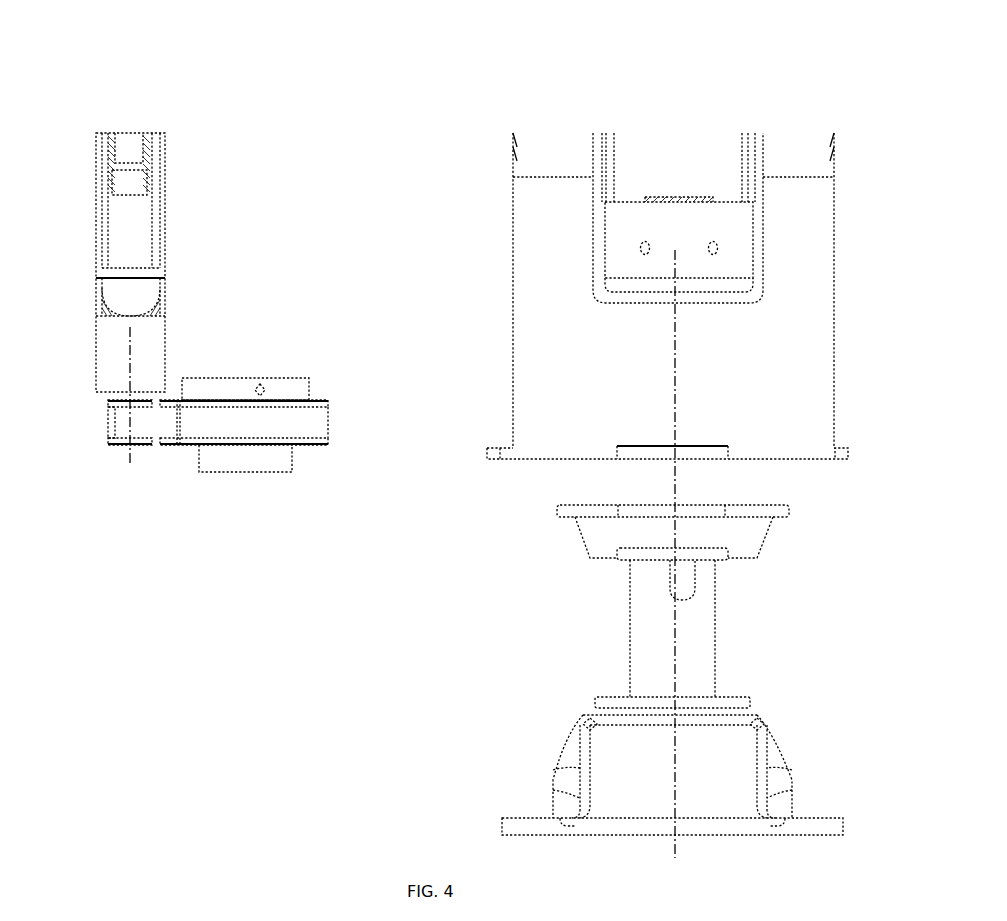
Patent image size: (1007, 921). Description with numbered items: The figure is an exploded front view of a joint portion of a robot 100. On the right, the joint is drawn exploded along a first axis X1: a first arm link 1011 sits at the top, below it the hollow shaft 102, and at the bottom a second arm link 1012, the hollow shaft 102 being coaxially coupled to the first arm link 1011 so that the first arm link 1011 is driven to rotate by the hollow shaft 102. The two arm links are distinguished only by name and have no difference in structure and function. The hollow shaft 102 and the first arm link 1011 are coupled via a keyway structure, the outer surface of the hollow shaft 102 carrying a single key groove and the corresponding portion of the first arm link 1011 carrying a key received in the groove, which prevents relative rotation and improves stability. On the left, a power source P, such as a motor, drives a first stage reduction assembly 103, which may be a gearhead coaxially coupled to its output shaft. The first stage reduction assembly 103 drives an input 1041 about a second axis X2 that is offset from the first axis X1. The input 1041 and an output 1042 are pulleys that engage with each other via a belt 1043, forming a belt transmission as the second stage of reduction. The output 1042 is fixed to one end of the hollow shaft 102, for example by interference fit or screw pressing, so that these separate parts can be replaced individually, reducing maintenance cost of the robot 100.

The robot 100 is at (626, 72).
The first arm link 1011 is at (525, 337).
The second arm link 1012 is at (572, 757).
The hollow shaft 102 is at (707, 633).
The first stage reduction assembly 103 is at (153, 333).
The input 1041 is at (118, 438).
The output 1042 is at (212, 388).
The belt 1043 is at (310, 422).
The power source P is at (153, 283).
The first axis X1 is at (657, 847).
The second axis X2 is at (115, 464).